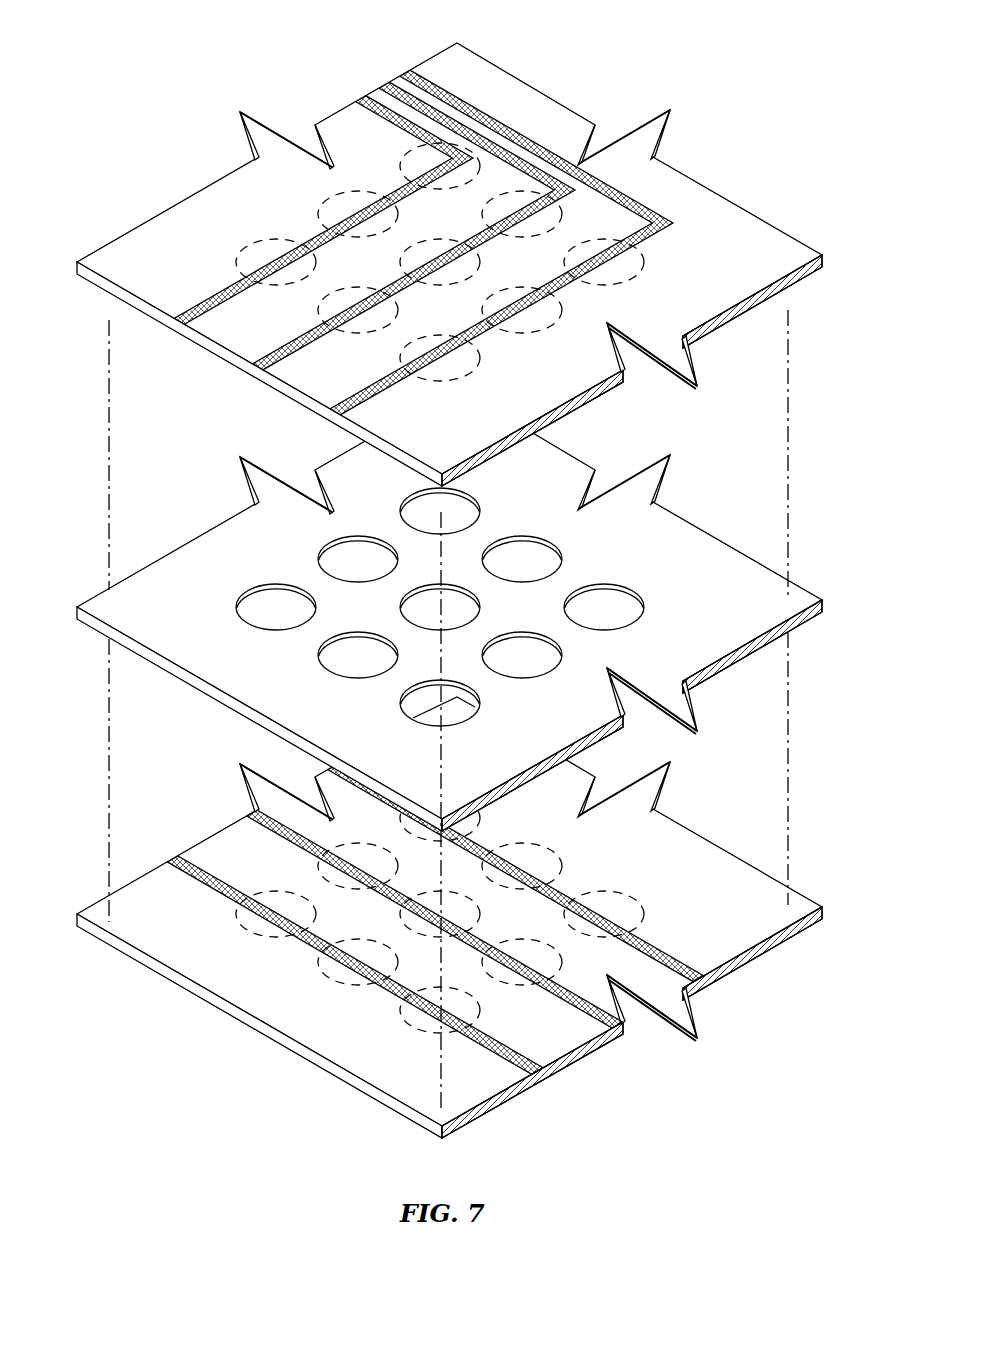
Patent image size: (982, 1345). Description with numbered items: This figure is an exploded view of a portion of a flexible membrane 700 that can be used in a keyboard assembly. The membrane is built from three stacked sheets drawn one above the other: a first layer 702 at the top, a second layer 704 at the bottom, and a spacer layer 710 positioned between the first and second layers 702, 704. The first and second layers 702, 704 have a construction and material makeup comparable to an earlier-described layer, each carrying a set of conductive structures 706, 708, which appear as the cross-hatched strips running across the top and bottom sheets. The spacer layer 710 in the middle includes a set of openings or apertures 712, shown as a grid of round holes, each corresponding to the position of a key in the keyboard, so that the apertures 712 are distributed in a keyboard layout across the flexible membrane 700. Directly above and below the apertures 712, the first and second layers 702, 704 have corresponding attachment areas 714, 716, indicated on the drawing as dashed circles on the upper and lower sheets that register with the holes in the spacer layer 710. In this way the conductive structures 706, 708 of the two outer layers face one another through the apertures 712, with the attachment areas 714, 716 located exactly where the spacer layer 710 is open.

The flexible membrane 700 is at (150, 94).
The first layer 702 is at (836, 255).
The second layer 704 is at (832, 906).
The conductive structures 706 is at (650, 203).
The conductive structures 708 is at (677, 953).
The spacer layer 710 is at (798, 604).
The apertures 712 is at (635, 585).
The attachment areas 714 is at (628, 277).
The attachment areas 716 is at (637, 893).